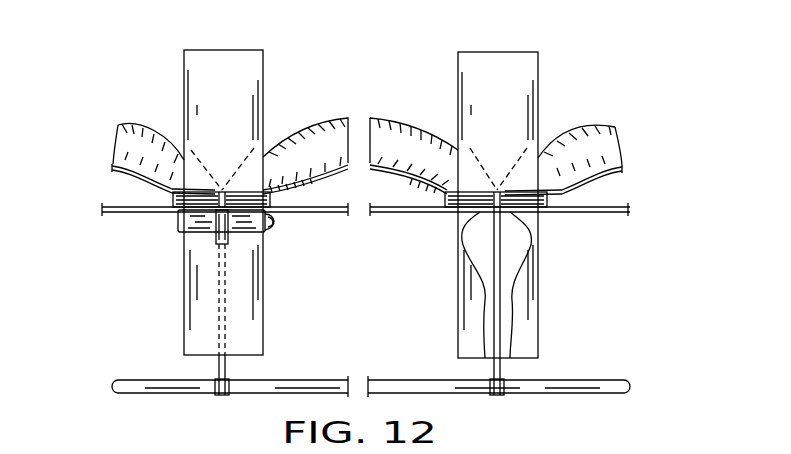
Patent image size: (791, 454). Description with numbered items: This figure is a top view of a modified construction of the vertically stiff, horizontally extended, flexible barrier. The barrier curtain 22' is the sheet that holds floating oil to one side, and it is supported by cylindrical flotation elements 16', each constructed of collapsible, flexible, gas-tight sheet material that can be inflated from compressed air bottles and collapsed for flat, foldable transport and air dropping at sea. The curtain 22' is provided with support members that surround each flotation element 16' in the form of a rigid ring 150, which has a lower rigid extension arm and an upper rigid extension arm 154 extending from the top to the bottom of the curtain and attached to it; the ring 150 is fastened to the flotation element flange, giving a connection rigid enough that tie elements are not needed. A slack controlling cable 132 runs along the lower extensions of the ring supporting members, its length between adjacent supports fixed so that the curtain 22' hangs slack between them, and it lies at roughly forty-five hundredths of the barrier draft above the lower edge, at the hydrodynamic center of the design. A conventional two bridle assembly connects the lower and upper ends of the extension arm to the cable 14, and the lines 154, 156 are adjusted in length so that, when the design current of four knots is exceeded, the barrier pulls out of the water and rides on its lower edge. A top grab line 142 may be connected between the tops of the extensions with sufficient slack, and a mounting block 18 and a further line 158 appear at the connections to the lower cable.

The cable 14 is at (412, 380).
The flotation element 16' is at (361, 191).
The large diameter cylindrical portion 18 is at (178, 218).
The barrier curtain 22' is at (367, 131).
The slack controlling cable 132 is at (398, 215).
The top grab line 142 is at (396, 171).
The rigid ring 150 is at (170, 198).
The upper rigid extension arm 154 is at (214, 186).
The line 156 is at (218, 370).
The right rod 158 is at (502, 373).